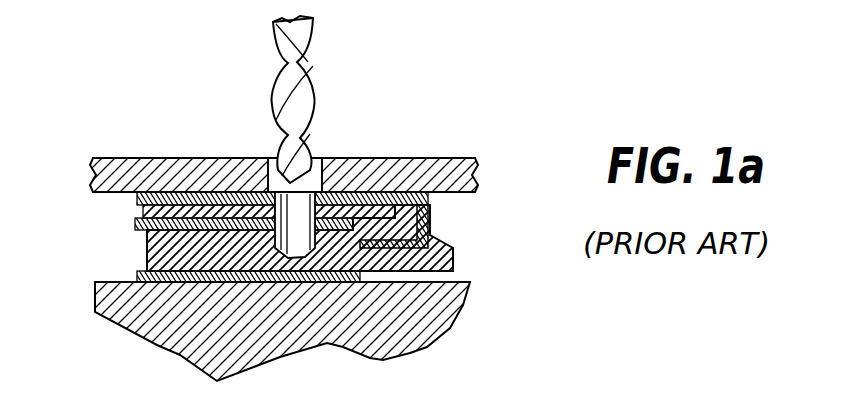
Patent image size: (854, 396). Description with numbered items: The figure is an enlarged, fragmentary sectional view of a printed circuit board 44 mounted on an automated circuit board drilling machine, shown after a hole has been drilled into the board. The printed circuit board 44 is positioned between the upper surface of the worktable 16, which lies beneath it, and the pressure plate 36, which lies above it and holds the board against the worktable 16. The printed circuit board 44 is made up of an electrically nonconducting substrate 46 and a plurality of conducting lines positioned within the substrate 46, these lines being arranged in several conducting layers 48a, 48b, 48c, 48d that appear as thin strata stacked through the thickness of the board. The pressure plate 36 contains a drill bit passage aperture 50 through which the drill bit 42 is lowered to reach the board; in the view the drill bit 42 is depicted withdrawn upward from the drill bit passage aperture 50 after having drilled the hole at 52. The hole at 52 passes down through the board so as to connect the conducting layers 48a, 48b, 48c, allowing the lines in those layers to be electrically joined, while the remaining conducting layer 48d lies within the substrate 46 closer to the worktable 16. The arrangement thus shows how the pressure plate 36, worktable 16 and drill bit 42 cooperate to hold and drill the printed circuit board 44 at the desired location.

The worktable 16 is at (450, 285).
The pressure plate 36 is at (413, 170).
The drill bit 42 is at (315, 80).
The printed circuit board 44 is at (453, 258).
The electrically nonconducting substrate 46 is at (440, 235).
The conducting layer 48a is at (165, 194).
The conducting layer 48b is at (135, 225).
The conducting layer 48c is at (250, 208).
The conducting layer 48d is at (137, 272).
The drill bit passage aperture 50 is at (316, 192).
The hole 52 is at (285, 190).